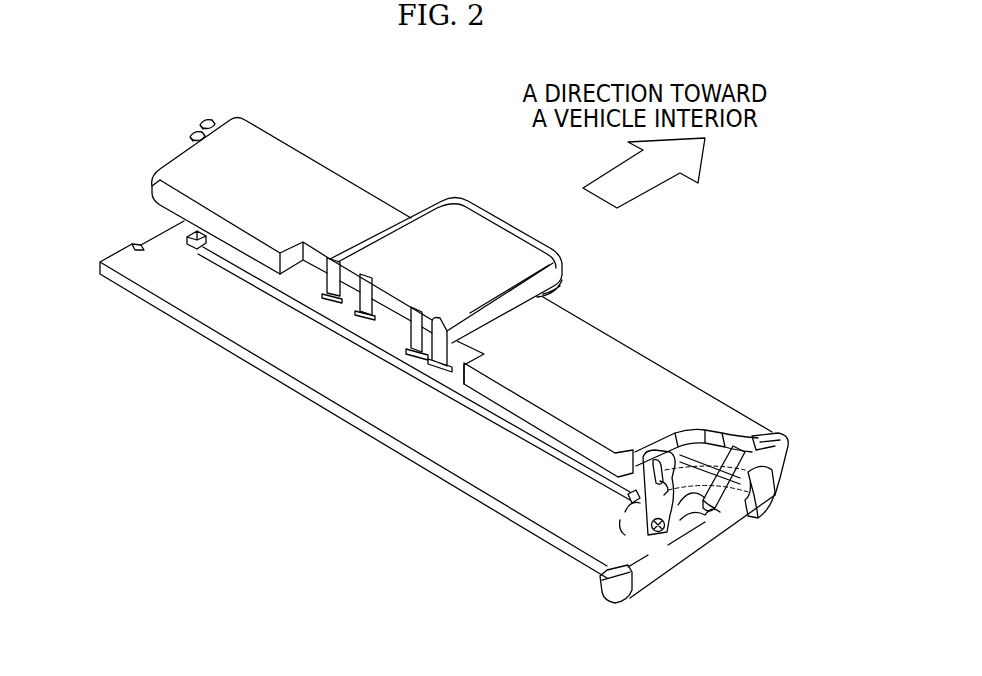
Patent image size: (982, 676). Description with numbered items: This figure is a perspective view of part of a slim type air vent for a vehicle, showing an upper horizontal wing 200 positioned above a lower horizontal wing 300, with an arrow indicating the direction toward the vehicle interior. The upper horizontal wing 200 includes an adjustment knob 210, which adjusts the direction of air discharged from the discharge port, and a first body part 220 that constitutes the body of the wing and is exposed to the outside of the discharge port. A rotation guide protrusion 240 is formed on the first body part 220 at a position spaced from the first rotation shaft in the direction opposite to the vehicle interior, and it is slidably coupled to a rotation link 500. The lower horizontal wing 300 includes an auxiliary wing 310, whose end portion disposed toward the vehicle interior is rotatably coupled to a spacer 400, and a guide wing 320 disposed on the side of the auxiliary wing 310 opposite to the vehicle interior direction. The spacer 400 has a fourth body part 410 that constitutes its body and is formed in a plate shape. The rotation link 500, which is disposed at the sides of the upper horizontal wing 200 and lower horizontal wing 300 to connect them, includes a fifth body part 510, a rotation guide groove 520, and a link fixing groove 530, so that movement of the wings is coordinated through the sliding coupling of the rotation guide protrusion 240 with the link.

The upper horizontal wing 200 is at (150, 148).
The adjustment knob 210 is at (513, 222).
The first body part 220 is at (330, 170).
The rotation guide protrusion 240 is at (670, 460).
The lower horizontal wing 300 is at (205, 347).
The auxiliary wing 310 is at (190, 233).
The guide wing 320 is at (137, 243).
The spacer 400 is at (718, 560).
The fourth body part 410 is at (635, 596).
The rotation link 500 is at (630, 515).
The fifth body part 510 is at (772, 487).
The rotation guide groove 520 is at (768, 518).
The link fixing groove 530 is at (665, 532).